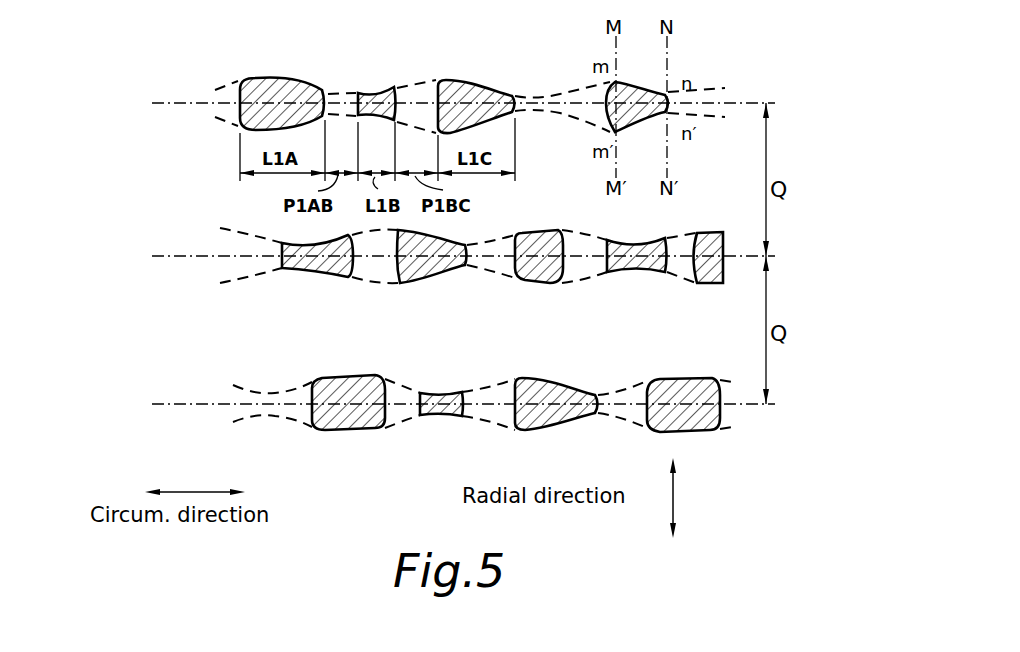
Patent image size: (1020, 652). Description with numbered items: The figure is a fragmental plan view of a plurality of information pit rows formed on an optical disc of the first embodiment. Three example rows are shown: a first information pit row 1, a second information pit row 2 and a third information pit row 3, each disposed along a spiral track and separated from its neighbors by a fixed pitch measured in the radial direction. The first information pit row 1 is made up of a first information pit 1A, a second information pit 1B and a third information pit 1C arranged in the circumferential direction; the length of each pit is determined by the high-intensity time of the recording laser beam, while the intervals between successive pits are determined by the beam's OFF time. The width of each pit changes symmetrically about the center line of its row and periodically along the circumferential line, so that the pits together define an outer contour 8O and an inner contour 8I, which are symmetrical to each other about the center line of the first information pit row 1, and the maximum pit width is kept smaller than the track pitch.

The first information pit row 1 is at (450, 107).
The second information pit row 2 is at (450, 255).
The third information pit row 3 is at (450, 403).
The first information pit 1A is at (277, 80).
The second information pit 1B is at (382, 91).
The third information pit 1C is at (480, 82).
The outer contour of the pit rows 8O is at (238, 83).
The inner contour of the pit rows 8I is at (234, 125).